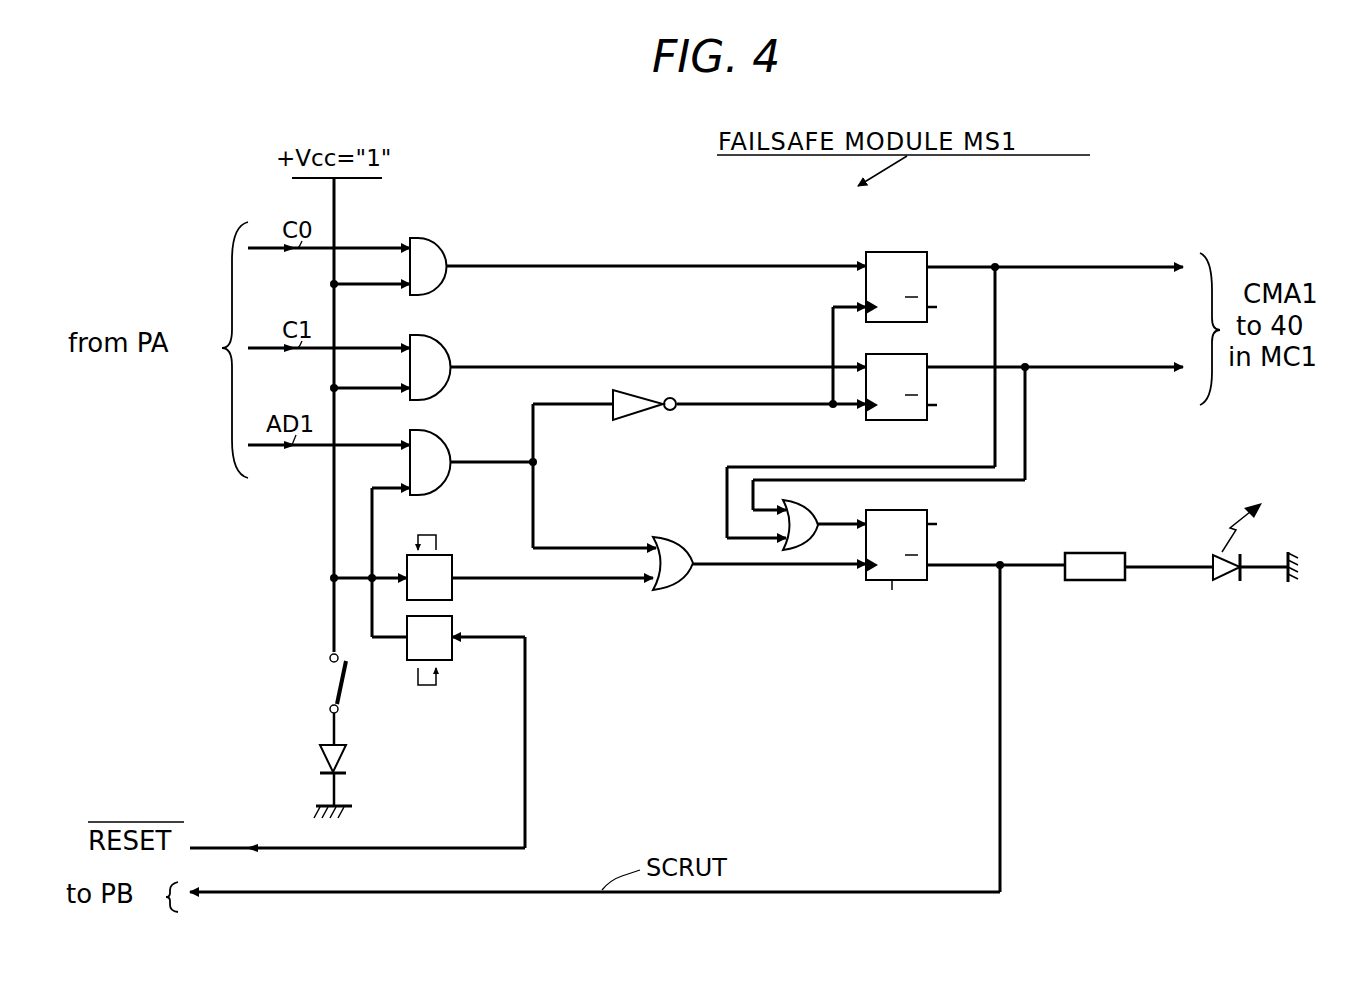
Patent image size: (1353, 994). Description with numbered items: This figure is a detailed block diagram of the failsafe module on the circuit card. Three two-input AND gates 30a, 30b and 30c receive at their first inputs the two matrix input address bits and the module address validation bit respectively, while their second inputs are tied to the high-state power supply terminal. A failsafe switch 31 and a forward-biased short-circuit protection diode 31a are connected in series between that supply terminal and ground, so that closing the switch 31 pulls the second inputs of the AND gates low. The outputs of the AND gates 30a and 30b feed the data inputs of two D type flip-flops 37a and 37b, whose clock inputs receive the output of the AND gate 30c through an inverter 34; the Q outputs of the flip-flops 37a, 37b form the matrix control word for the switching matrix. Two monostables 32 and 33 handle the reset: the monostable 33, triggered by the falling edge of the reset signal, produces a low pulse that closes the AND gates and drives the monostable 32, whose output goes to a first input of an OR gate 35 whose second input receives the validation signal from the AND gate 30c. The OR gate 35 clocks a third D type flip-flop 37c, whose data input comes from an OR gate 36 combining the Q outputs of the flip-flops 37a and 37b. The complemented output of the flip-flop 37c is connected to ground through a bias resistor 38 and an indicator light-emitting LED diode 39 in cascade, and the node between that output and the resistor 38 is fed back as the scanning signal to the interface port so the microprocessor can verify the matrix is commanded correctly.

The two-input AND gate 30a is at (432, 250).
The two-input AND gate 30b is at (432, 352).
The two-input AND gate 30c is at (432, 448).
The failsafe switch 31 is at (330, 682).
The short-circuit protection diode 31a is at (348, 760).
The monostable 32 is at (440, 570).
The monostable 33 is at (448, 643).
The inverter 34 is at (640, 414).
The two-input OR gate 35 is at (676, 580).
The two-input OR gate 36 is at (800, 508).
The D type flip-flop 37a is at (896, 252).
The D type flip-flop 37b is at (897, 421).
The D type flip-flop 37c is at (965, 565).
The bias resistor 38 is at (1100, 553).
The light-emitting LED diode 39 is at (1233, 583).